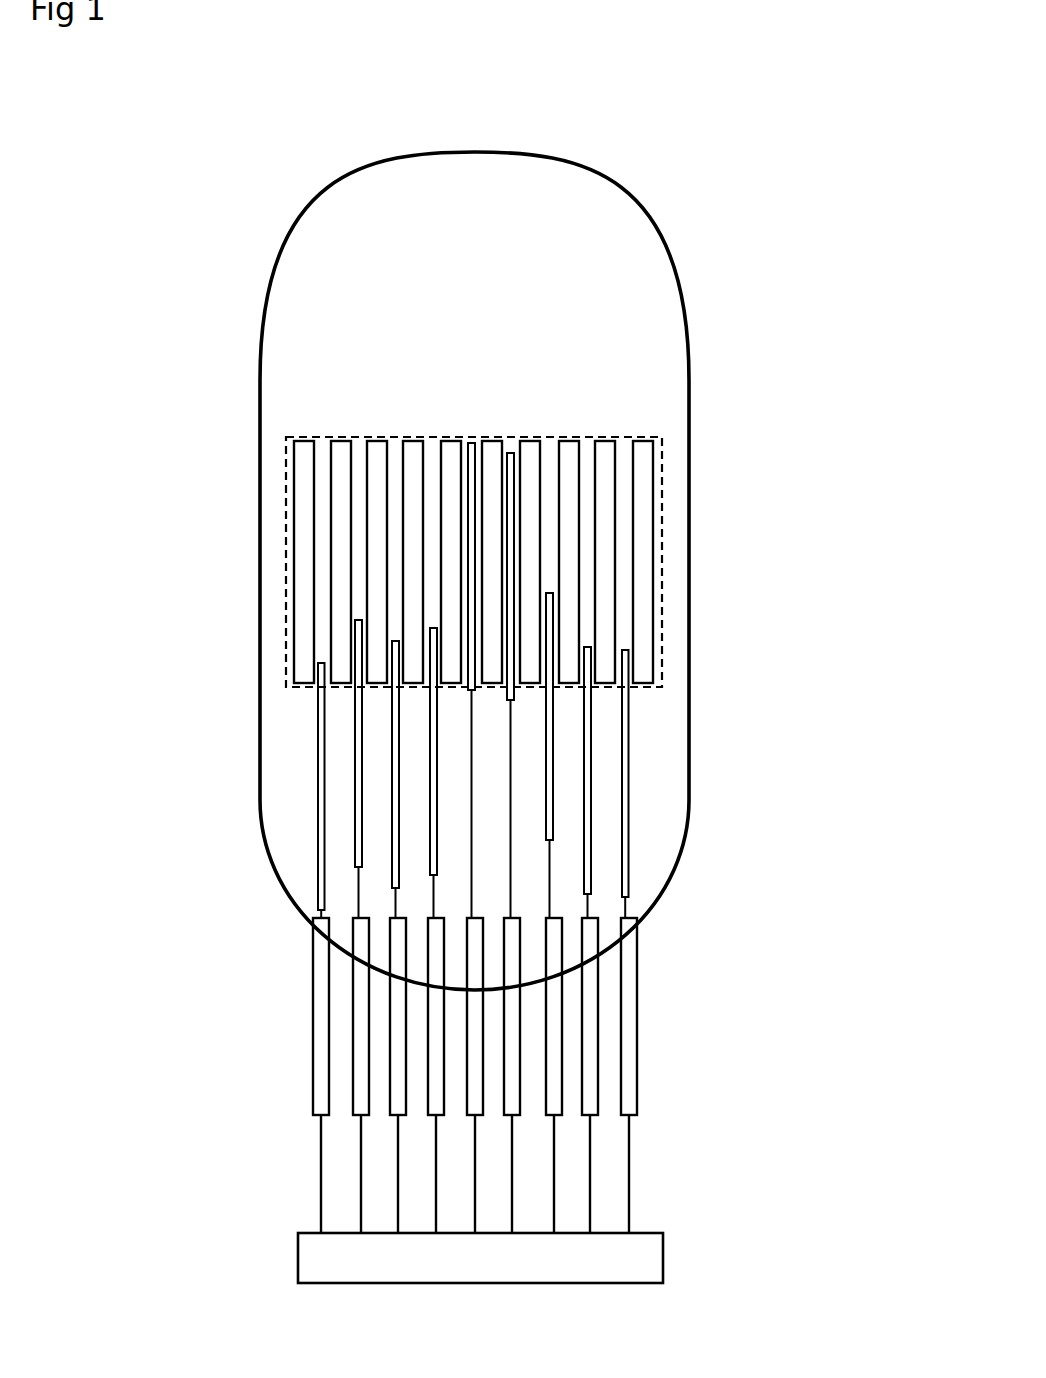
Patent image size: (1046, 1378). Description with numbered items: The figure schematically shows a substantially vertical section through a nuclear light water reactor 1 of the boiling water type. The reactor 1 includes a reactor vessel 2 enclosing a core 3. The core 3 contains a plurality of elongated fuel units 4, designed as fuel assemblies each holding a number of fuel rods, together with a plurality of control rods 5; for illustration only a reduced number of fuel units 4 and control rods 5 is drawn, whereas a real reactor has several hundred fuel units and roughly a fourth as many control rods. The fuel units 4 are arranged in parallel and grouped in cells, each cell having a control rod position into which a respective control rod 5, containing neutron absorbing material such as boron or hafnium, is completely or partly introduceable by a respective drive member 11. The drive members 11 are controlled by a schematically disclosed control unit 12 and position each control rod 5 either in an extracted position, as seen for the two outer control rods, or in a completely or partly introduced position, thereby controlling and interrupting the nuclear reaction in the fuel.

The nuclear light water reactor 1 is at (672, 204).
The reactor vessel 2 is at (677, 281).
The core 3 is at (652, 425).
The fuel units 4 is at (639, 525).
The control rods 5 is at (628, 788).
The drive member 11 is at (473, 1055).
The control unit 12 is at (633, 1255).